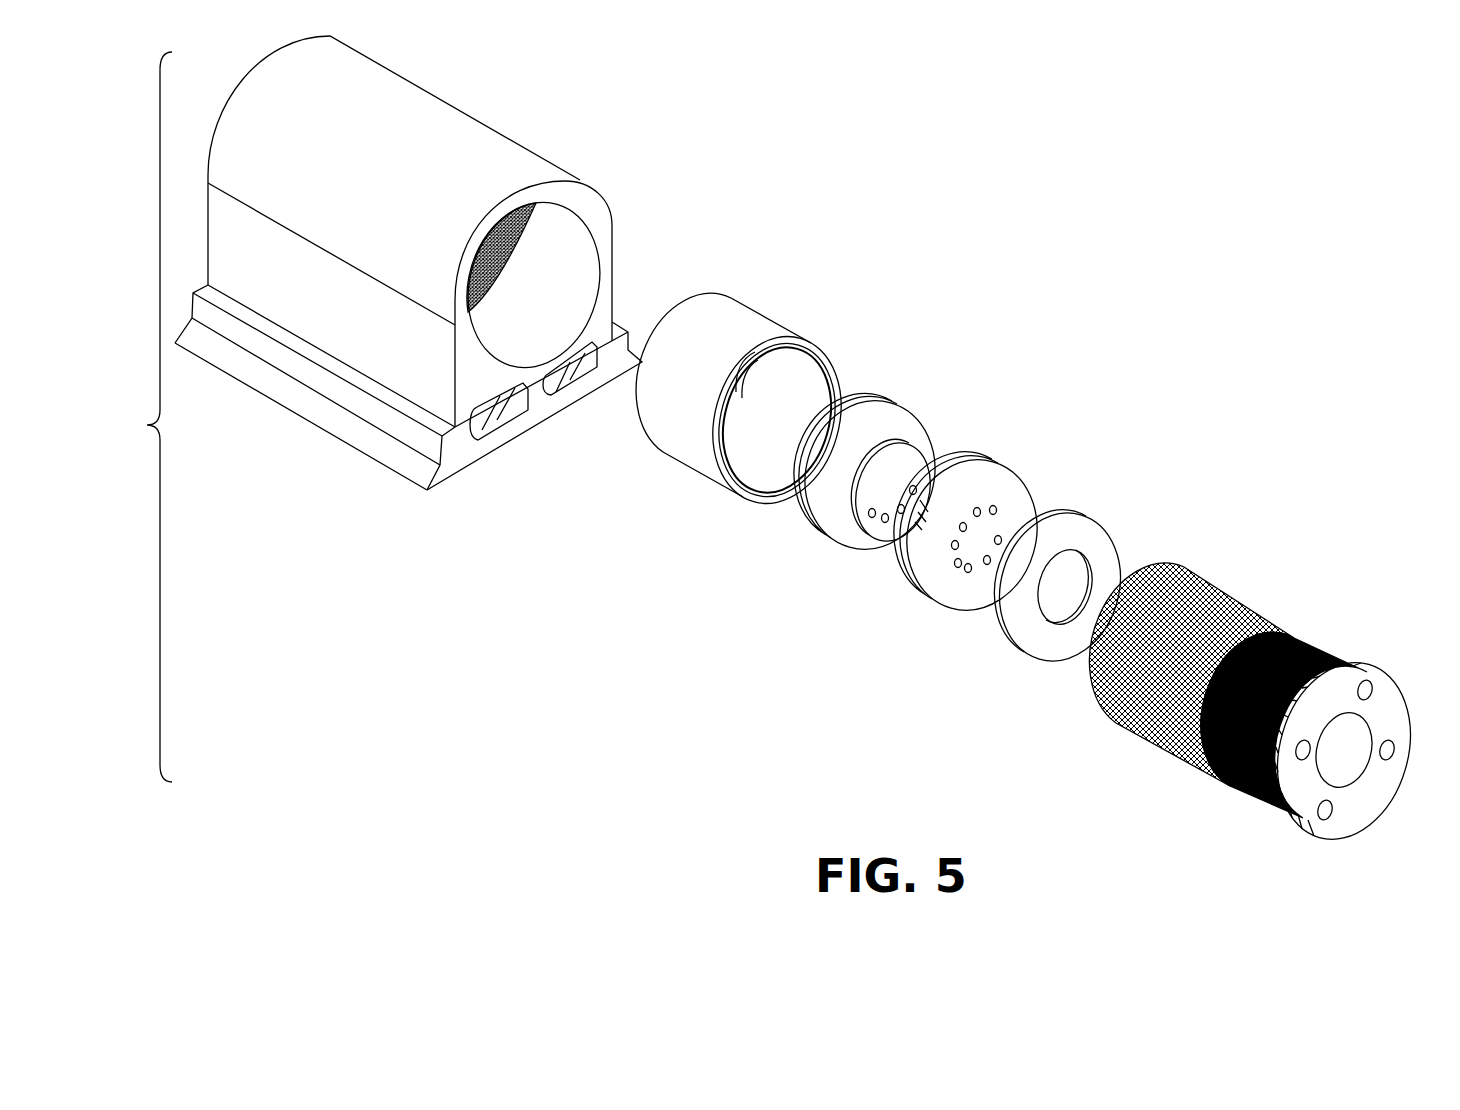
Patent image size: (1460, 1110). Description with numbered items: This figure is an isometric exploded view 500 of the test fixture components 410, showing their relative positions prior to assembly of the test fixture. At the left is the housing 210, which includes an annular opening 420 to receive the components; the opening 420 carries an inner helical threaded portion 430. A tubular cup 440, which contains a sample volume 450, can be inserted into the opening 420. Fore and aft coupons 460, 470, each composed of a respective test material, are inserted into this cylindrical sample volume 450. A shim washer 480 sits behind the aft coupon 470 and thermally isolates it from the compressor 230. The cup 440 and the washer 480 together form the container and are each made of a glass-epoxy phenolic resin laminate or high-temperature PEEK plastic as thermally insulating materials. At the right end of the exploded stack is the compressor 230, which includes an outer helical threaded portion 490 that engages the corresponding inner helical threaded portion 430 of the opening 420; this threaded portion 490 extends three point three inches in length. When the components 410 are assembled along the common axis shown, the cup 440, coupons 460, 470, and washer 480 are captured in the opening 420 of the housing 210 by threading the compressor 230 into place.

The isometric exploded view 500 is at (1220, 130).
The separated components 410 is at (128, 417).
The housing 210 is at (520, 145).
The annular opening 420 is at (517, 323).
The inner helical threaded portion 430 is at (523, 240).
The tubular cup 440 is at (767, 320).
The sample volume 450 is at (763, 435).
The fore coupon 460 is at (897, 403).
The aft coupon 470 is at (1013, 473).
The shim washer 480 is at (1110, 527).
The outer helical threaded portion 490 is at (1122, 735).
The compressor 230 is at (1373, 663).